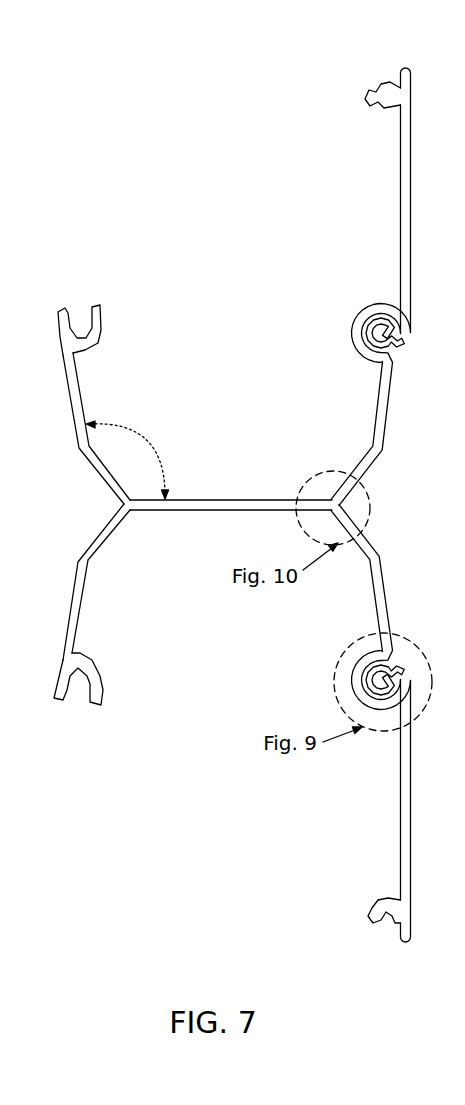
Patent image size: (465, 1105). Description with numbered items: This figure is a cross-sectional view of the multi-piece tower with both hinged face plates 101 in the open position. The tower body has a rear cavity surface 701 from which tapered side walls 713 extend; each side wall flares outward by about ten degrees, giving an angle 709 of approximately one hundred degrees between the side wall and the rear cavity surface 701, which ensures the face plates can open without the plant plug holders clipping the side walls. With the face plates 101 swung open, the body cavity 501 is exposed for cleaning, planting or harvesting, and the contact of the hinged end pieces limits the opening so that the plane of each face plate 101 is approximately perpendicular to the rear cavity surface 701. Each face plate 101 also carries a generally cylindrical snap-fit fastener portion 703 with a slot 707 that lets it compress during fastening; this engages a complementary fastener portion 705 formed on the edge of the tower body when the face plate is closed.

The face plate 101 is at (411, 170).
The body cavity 501 is at (207, 421).
The rear cavity surface 701 is at (245, 511).
The first portion of snap-fit fastener 703 is at (380, 104).
The second portion of snap-fit fastener 705 is at (97, 340).
The slot 707 is at (375, 76).
The angle 709 is at (157, 457).
The side wall 713 is at (71, 405).